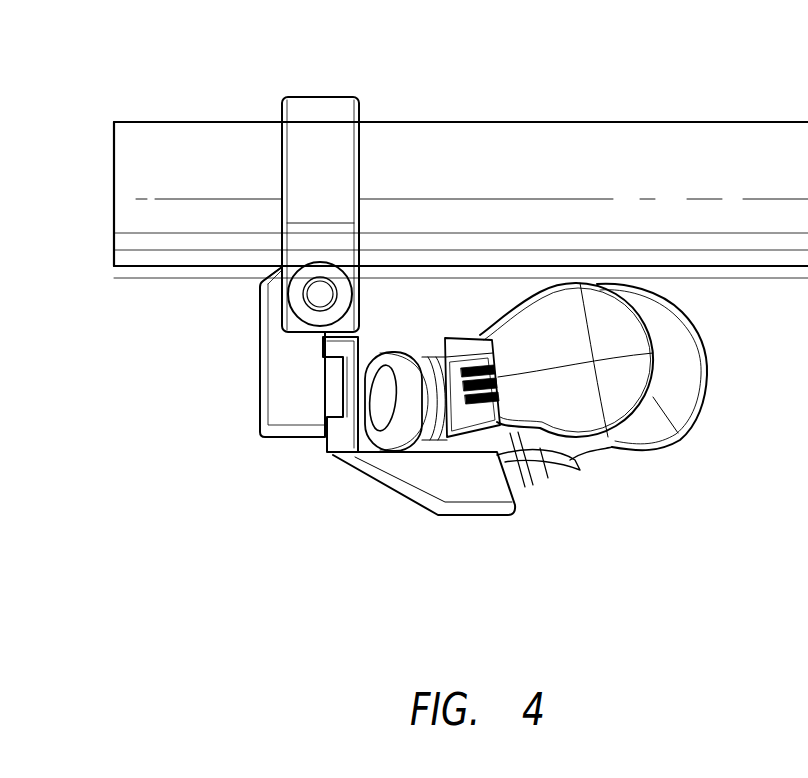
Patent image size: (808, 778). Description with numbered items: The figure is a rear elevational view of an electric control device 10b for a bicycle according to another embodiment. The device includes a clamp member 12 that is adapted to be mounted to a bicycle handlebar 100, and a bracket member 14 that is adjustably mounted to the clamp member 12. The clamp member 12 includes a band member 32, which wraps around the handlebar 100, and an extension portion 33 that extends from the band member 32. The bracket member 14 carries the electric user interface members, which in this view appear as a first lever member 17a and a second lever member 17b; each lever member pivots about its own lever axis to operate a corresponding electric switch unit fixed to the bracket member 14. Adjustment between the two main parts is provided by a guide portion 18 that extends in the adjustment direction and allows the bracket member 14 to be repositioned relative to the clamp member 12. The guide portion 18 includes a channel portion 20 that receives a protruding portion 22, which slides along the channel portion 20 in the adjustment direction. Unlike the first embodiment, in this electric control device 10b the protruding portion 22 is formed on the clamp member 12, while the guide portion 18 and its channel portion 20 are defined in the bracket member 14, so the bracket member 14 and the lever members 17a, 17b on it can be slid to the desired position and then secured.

The bicycle handlebar 100 is at (672, 130).
The band member 32 is at (337, 108).
The extension portion 33 is at (272, 303).
The clamp member 12 is at (273, 347).
The protruding portion 22 is at (332, 387).
The channel portion 20 is at (350, 360).
The bracket member 14 is at (350, 440).
The first lever member 17a is at (634, 324).
The second lever member 17b is at (683, 377).
The electric control device 10b is at (194, 463).
The guide portion 18 is at (291, 474).